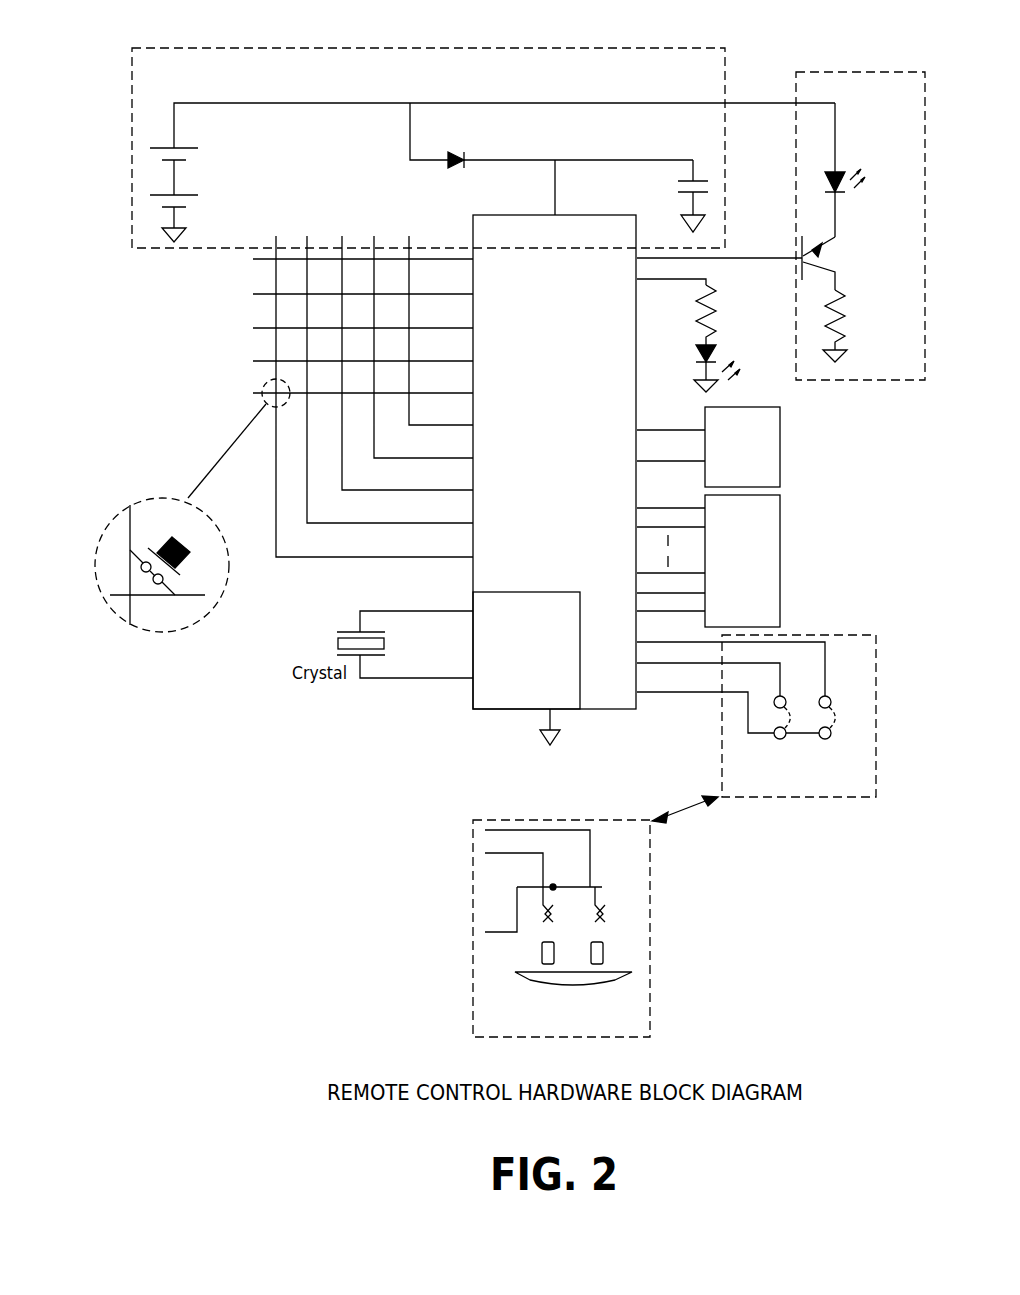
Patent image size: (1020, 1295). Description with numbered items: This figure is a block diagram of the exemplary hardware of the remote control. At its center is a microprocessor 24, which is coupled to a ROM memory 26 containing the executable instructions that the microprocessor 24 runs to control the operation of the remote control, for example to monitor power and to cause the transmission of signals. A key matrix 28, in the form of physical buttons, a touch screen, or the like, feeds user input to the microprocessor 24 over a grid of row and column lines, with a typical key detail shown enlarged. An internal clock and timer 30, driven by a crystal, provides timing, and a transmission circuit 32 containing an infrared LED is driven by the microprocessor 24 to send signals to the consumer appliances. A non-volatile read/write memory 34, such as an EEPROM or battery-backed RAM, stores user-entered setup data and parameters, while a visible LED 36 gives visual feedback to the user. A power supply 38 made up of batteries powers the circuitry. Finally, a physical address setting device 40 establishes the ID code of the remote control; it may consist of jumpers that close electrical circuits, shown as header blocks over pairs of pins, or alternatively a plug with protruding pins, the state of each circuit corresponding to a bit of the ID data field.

The microprocessor 24 is at (592, 711).
The ROM memory 26 is at (782, 597).
The key matrix 28 is at (250, 342).
The internal clock and timer 30 is at (490, 711).
The transmission circuit 32 is at (850, 70).
The non-volatile read/write memory 34 is at (782, 470).
The visible LED 36 is at (698, 353).
The power supply 38 is at (665, 48).
The physical address setting device 40 is at (828, 797).